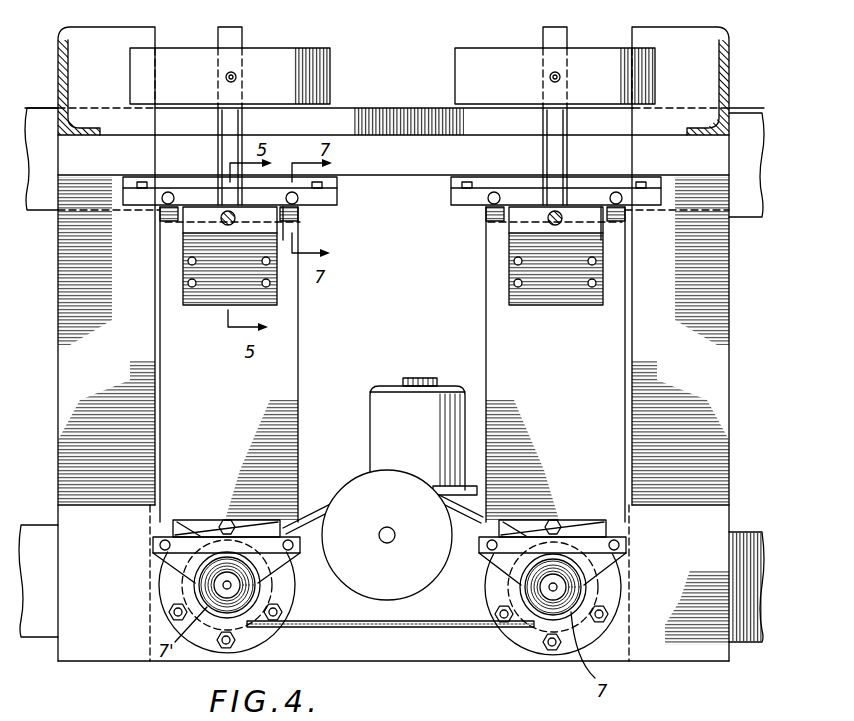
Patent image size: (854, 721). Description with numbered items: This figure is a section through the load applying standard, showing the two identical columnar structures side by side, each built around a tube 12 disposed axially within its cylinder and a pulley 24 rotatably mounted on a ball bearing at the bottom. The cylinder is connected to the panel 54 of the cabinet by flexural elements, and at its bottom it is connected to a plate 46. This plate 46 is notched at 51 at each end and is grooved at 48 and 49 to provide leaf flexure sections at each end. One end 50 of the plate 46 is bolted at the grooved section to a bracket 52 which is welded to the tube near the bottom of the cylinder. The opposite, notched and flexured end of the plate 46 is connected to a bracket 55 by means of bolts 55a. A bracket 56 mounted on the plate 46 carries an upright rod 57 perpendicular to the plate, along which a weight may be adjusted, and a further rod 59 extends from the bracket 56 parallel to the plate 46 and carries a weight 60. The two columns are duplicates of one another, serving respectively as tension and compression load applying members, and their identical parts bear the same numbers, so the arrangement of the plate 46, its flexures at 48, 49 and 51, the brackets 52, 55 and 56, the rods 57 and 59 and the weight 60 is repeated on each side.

The tube 12 is at (240, 594).
The pulley 24 is at (188, 590).
The plate 46 is at (283, 370).
The groove 48 is at (296, 505).
The groove 49 is at (292, 211).
The end of plate 50 is at (153, 547).
The notch 51 is at (180, 213).
The bracket 52 is at (172, 567).
The panel (back support) 54 is at (380, 138).
The bracket 55 is at (338, 200).
The bolt 55a is at (167, 192).
The bracket 56 is at (268, 298).
The upright rod 57 is at (223, 222).
The rod 59 is at (244, 33).
The weight 60 is at (178, 52).